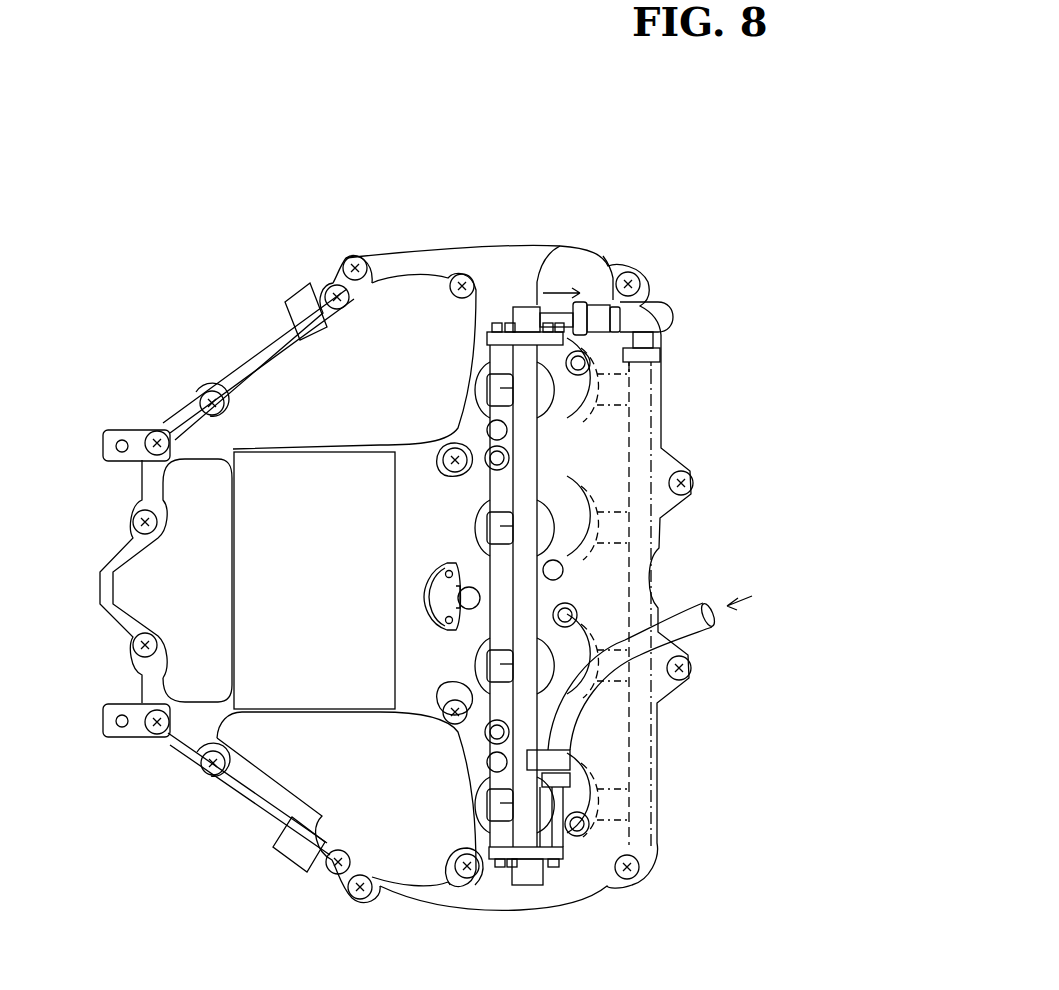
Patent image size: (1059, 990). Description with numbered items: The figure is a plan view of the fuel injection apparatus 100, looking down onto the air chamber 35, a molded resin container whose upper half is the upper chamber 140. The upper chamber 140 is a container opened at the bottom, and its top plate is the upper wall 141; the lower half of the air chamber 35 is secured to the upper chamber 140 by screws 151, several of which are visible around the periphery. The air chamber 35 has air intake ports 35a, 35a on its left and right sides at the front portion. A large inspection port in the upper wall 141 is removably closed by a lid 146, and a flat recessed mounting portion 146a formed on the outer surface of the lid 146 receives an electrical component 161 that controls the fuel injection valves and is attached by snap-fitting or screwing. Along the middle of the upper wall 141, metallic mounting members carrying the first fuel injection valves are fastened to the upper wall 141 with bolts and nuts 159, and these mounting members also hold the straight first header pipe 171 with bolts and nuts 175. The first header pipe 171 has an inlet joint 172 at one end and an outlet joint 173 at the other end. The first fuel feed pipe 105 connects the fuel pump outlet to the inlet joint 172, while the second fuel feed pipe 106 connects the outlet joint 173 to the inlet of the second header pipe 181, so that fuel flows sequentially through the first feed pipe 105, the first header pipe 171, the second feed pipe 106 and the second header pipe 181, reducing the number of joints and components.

The fuel injection apparatus 100 is at (757, 171).
The air chamber 35 is at (327, 238).
The air intake port 35a is at (245, 358).
The upper chamber 140 is at (448, 236).
The upper wall 141 is at (505, 277).
The lid 146 is at (199, 508).
The mounting portion 146a is at (233, 487).
The electrical component 161 is at (327, 486).
The first header pipe 171 is at (532, 465).
The inlet joint 172 is at (557, 837).
The outlet joint 173 is at (543, 276).
The second fuel feed pipe 106 is at (672, 326).
The screw 151 is at (645, 283).
The bolts and nuts 159 is at (509, 462).
The bolts and nuts 175 is at (488, 428).
The second header pipe 181 is at (656, 526).
The first fuel feed pipe 105 is at (697, 618).